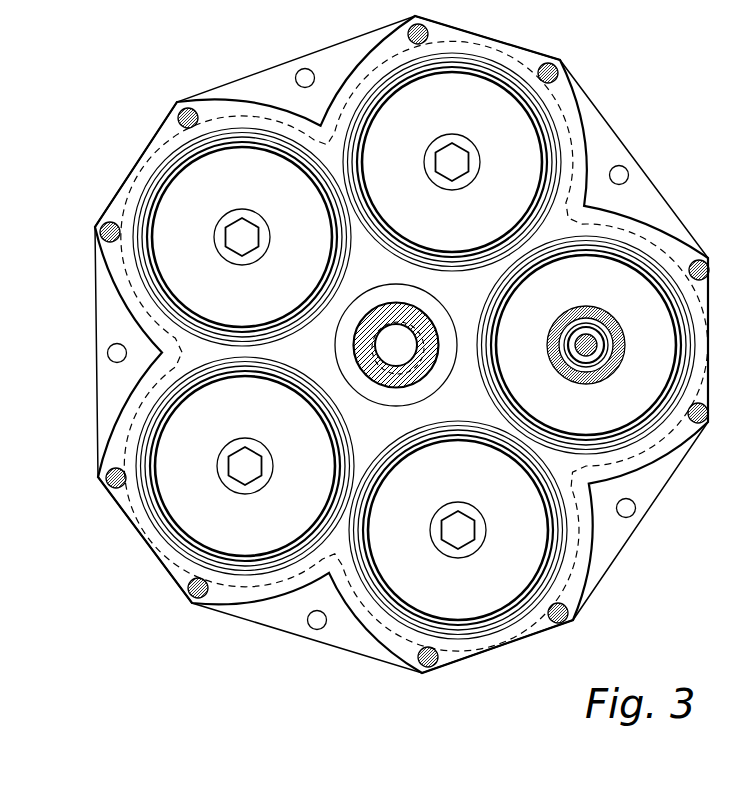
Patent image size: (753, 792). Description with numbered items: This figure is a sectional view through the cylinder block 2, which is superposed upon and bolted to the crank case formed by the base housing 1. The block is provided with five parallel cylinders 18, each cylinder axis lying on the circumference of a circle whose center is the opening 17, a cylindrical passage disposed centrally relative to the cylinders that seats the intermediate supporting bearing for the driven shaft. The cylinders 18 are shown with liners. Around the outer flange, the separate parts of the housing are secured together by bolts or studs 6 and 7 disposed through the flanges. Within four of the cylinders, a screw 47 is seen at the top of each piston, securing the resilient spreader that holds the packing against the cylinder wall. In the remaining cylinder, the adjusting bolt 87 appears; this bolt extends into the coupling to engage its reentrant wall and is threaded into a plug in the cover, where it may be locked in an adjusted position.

The base housing 1 is at (95, 314).
The cylinder block 2 is at (131, 393).
The bolt 6 is at (318, 624).
The stud 7 is at (433, 662).
The cylindrical passage 17 is at (418, 298).
The cylinder 18 is at (195, 172).
The screw 47 is at (246, 235).
The adjusting bolt 87 is at (617, 328).